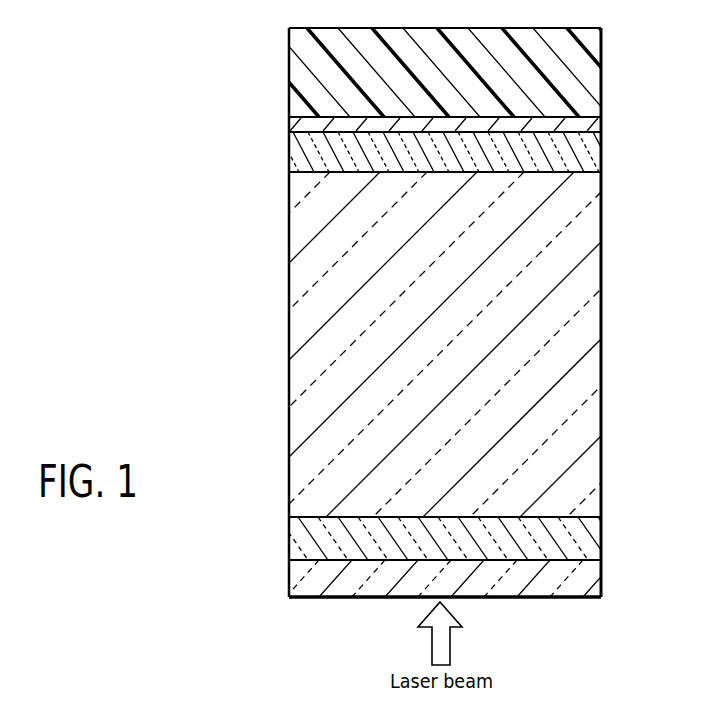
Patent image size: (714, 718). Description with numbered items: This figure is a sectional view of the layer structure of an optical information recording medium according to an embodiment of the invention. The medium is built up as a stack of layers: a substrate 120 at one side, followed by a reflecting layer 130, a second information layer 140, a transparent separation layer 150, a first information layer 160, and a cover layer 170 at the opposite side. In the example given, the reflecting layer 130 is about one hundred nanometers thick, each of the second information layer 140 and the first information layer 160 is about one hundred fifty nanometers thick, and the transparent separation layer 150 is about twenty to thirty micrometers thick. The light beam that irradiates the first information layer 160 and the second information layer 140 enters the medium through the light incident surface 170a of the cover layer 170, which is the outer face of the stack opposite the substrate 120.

The substrate 120 is at (296, 69).
The reflecting layer 130 is at (297, 120).
The second information layer 140 is at (297, 154).
The transparent separation layer 150 is at (294, 406).
The first information layer 160 is at (294, 531).
The cover layer 170 is at (294, 574).
The light incident surface 170a is at (551, 603).